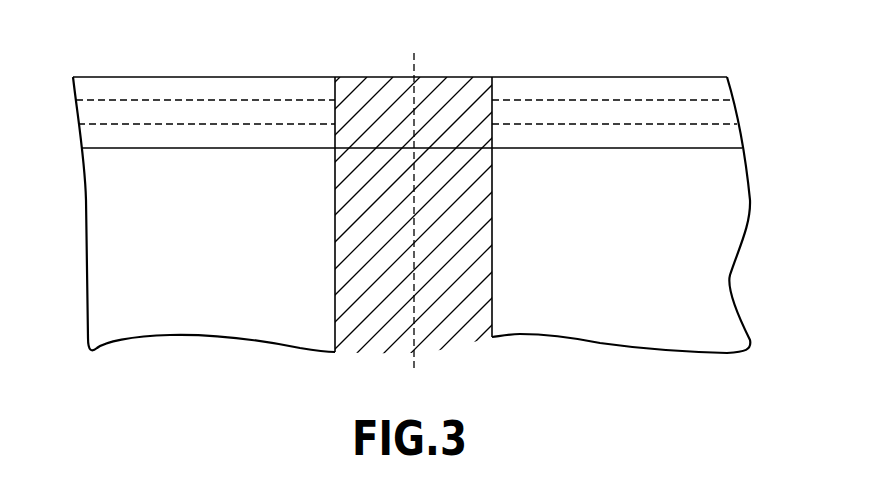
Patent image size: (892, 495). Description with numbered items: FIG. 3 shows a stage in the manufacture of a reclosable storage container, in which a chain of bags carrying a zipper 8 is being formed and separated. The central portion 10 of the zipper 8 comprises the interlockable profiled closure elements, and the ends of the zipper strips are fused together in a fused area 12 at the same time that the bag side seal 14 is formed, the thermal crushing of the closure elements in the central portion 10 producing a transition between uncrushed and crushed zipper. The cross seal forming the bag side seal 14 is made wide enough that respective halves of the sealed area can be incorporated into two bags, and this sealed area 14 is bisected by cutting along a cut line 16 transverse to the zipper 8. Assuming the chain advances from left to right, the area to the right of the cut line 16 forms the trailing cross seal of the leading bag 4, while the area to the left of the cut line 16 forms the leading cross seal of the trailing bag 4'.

The leading bag 4 is at (650, 215).
The trailing bag 4' is at (181, 214).
The zipper 8 is at (676, 74).
The central portion of the zipper 10 is at (157, 96).
The fused area 12 is at (452, 80).
The bag side seal 14 is at (488, 226).
The cut line 16 is at (412, 200).